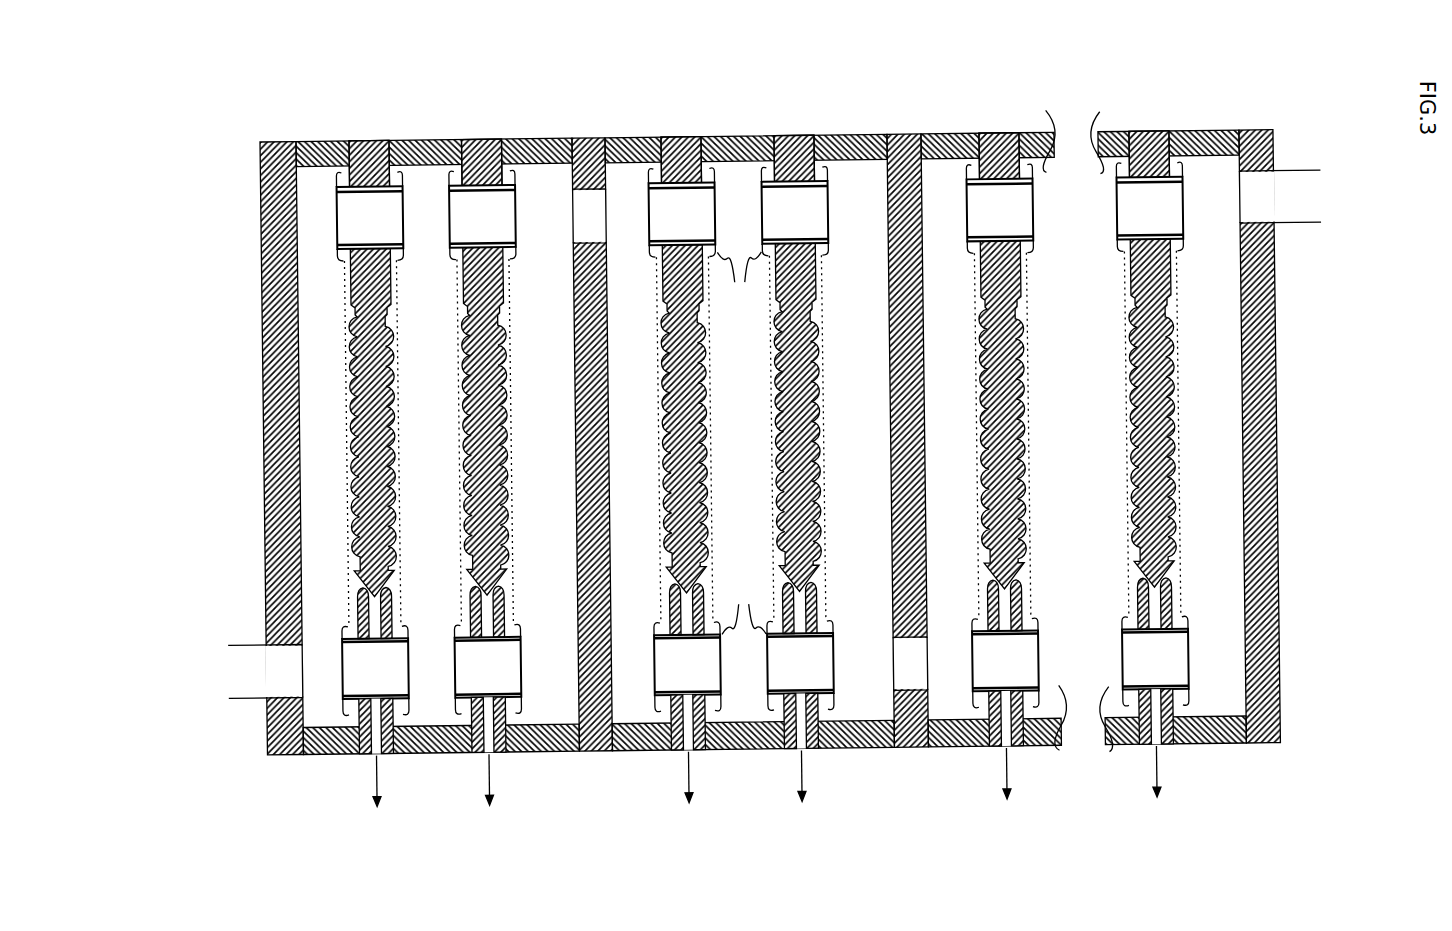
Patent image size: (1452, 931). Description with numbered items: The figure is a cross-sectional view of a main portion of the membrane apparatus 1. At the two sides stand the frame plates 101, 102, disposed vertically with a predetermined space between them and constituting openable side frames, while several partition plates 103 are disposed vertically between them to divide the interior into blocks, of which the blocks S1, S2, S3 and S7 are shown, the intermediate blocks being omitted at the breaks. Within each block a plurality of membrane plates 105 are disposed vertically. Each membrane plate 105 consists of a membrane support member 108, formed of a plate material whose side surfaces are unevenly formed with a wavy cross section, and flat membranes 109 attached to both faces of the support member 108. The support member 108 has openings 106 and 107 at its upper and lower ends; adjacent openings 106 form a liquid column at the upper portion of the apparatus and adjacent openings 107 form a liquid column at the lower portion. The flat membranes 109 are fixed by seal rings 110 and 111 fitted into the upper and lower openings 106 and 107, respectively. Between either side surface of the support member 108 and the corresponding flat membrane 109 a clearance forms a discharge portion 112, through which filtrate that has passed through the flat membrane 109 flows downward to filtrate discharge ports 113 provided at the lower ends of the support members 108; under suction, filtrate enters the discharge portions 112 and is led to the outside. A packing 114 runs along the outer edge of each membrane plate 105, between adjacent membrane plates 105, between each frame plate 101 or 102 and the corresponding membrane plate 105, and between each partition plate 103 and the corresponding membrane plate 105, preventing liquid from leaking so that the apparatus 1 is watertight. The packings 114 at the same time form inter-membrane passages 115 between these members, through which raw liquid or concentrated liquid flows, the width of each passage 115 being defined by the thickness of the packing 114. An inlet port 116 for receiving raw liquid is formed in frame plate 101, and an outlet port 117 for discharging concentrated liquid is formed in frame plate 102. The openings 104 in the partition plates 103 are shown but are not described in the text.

The membrane apparatus 1 is at (1310, 333).
The frame plate 101 is at (262, 291).
The frame plate 102 is at (1265, 495).
The partition plate 103 is at (592, 757).
The communication opening 104 is at (588, 226).
The membrane plate 105 is at (483, 144).
The opening 106 is at (1138, 212).
The opening 107 is at (1135, 655).
The membrane support member 108 is at (1135, 326).
The flat membrane 109 is at (1135, 402).
The seal ring 110 is at (739, 283).
The seal ring 111 is at (743, 596).
The discharge portion 112 is at (1135, 472).
The filtrate discharge port 113 is at (365, 748).
The packing 114 is at (318, 143).
The inter-membrane passage 115 is at (301, 386).
The inlet port 116 is at (278, 668).
The outlet port 117 is at (1265, 215).
The block S1 is at (433, 93).
The block S2 is at (779, 93).
The block S3 is at (1004, 83).
The block S7 is at (1222, 82).